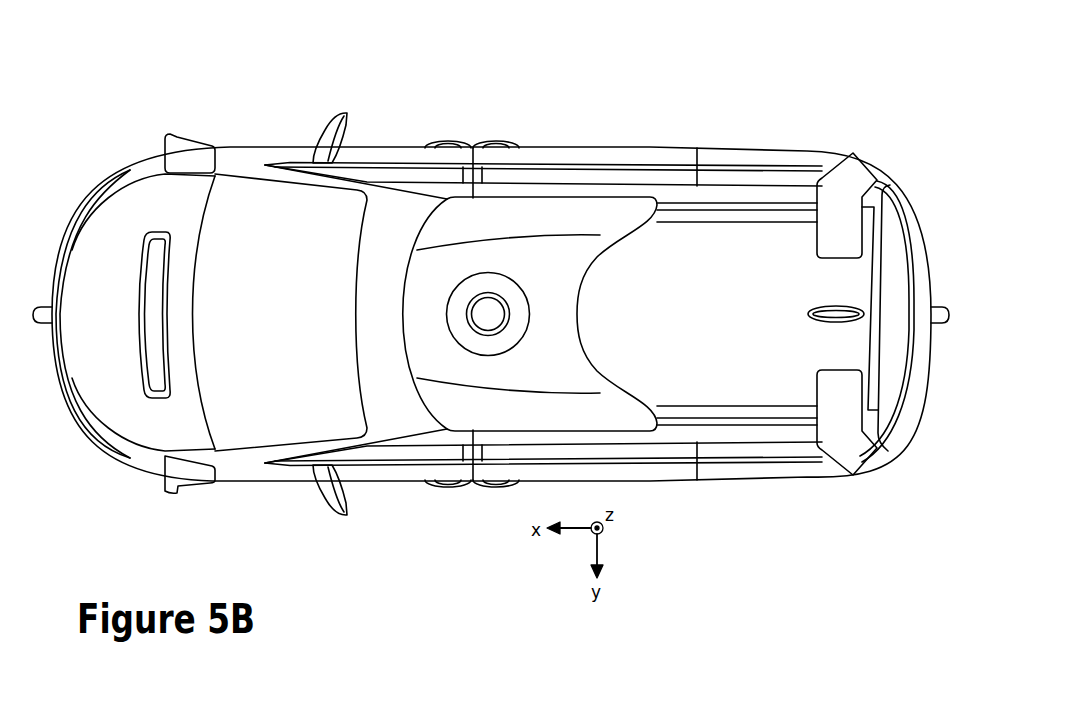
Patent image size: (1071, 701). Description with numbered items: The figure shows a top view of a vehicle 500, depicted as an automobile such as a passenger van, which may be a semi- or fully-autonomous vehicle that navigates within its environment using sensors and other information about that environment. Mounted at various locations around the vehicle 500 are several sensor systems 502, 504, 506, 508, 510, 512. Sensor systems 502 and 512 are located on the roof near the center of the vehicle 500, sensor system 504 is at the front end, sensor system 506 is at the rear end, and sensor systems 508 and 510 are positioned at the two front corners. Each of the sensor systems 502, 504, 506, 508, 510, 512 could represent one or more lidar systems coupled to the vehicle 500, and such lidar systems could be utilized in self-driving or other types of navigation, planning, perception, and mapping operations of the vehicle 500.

The vehicle 500 is at (836, 66).
The sensor system 502 is at (497, 273).
The sensor system 504 is at (41, 307).
The sensor system 506 is at (940, 307).
The sensor system 508 is at (171, 135).
The sensor system 510 is at (172, 494).
The sensor system 512 is at (443, 313).